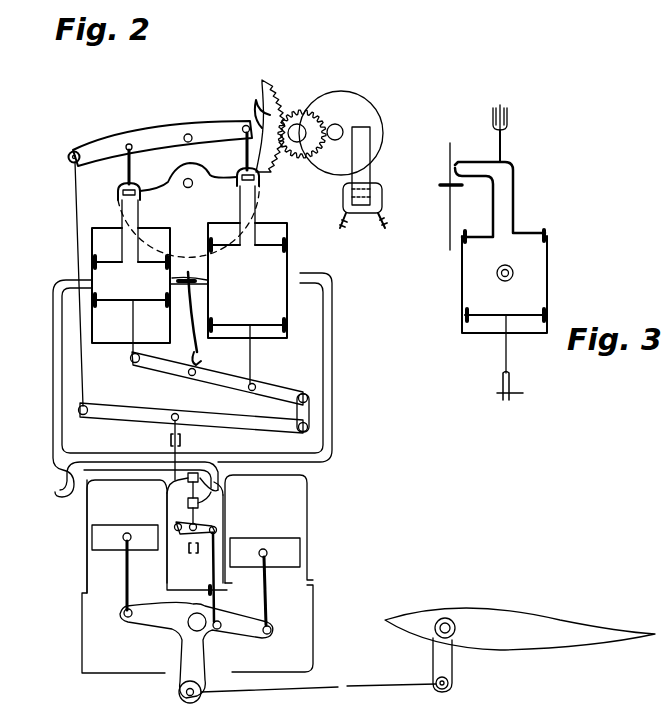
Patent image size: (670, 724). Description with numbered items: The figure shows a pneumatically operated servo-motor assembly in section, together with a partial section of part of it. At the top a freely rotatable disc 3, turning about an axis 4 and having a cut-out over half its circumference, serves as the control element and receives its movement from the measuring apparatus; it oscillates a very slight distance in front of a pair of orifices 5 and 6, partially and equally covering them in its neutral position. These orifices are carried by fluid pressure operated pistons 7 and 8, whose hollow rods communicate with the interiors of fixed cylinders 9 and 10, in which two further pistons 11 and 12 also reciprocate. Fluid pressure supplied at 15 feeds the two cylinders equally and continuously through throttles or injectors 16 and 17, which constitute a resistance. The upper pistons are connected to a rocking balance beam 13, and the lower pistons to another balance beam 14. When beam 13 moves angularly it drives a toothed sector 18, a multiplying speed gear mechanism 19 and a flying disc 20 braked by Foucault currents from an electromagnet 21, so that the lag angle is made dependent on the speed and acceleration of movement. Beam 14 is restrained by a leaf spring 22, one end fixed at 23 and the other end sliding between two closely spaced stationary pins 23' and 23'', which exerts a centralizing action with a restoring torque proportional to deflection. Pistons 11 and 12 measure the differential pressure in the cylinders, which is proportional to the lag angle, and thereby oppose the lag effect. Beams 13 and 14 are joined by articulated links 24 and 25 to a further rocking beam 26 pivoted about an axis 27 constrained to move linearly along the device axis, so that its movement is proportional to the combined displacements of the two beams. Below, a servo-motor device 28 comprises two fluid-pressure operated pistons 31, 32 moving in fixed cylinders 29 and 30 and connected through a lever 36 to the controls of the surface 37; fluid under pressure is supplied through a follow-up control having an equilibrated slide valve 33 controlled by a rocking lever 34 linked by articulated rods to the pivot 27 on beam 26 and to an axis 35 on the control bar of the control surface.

In FIG. 2, the disc 3 is at (224, 193).
In FIG. 3, the disc 3 is at (452, 217).
In FIG. 2, the axis 4 is at (186, 180).
In FIG. 3, the axis 4 is at (450, 187).
In FIG. 2, the orifice 5 is at (118, 189).
In FIG. 3, the orifice 5 is at (527, 237).
In FIG. 2, the orifice 6 is at (243, 166).
In FIG. 3, the orifice 6 is at (462, 162).
In FIG. 2, the fluid pressure operated piston 7 is at (110, 262).
In FIG. 2, the fluid pressure operated piston 8 is at (264, 245).
In FIG. 2, the cylinder 9 is at (143, 285).
In FIG. 2, the cylinder 10 is at (248, 300).
In FIG. 3, the cylinder 10 is at (490, 290).
In FIG. 2, the piston 11 is at (123, 302).
In FIG. 2, the piston 12 is at (253, 326).
In FIG. 3, the piston 12 is at (487, 317).
In FIG. 2, the rocking balance beam 13 is at (167, 137).
In FIG. 3, the rocking balance beam 13 is at (500, 103).
In FIG. 2, the balance beam 14 is at (230, 382).
In FIG. 2, the fluid pressure supply 15 is at (48, 499).
In FIG. 2, the throttle or injector 16 is at (92, 280).
In FIG. 2, the throttle or injector 17 is at (300, 270).
In FIG. 3, the throttle or injector 17 is at (513, 273).
In FIG. 2, the toothed sector 18 is at (272, 84).
In FIG. 2, the multiplying speed gear mechanism 19 is at (291, 103).
In FIG. 2, the flying disc 20 is at (353, 105).
In FIG. 2, the electromagnet 21 is at (371, 178).
In FIG. 2, the spring 22 is at (188, 312).
In FIG. 2, the fixed end 23 is at (215, 355).
In FIG. 2, the pin 23' is at (193, 244).
In FIG. 2, the pin 23'' is at (212, 273).
In FIG. 2, the articulated rod or link 24 is at (91, 288).
In FIG. 2, the articulated rod or link 25 is at (292, 413).
In FIG. 2, the rocking beam 26 is at (194, 441).
In FIG. 2, the axis or pivot 27 is at (172, 416).
In FIG. 2, the servo-motor device 28 is at (197, 576).
In FIG. 2, the cylinder 29 is at (127, 536).
In FIG. 2, the cylinder 30 is at (269, 529).
In FIG. 2, the fluid-pressure operated piston 31 is at (125, 567).
In FIG. 2, the fluid-pressure operated piston 32 is at (265, 581).
In FIG. 2, the equilibrated slide valve 33 is at (212, 480).
In FIG. 2, the rocking lever 34 is at (197, 557).
In FIG. 2, the axis 35 is at (222, 620).
In FIG. 2, the rocking lever 36 is at (278, 652).
In FIG. 2, the control surface 37 is at (520, 650).